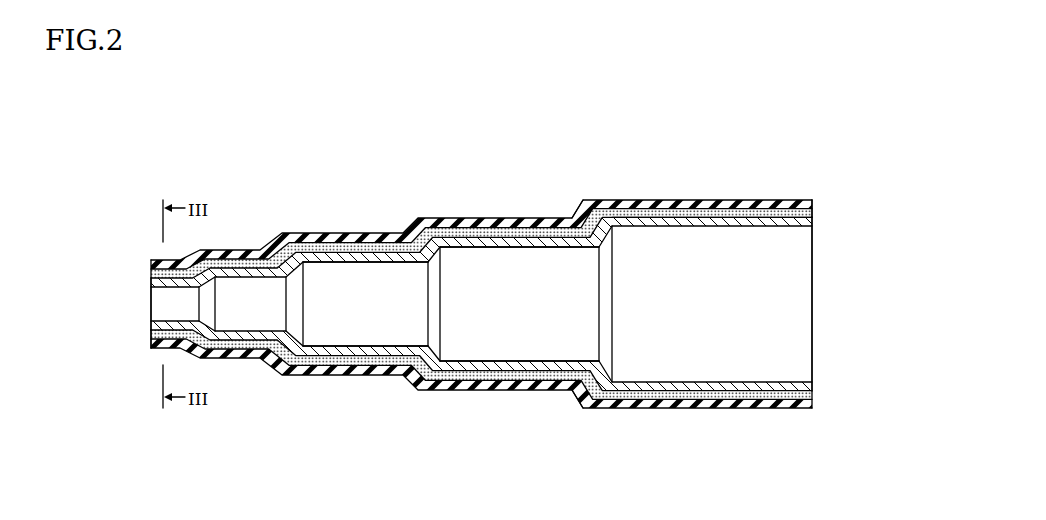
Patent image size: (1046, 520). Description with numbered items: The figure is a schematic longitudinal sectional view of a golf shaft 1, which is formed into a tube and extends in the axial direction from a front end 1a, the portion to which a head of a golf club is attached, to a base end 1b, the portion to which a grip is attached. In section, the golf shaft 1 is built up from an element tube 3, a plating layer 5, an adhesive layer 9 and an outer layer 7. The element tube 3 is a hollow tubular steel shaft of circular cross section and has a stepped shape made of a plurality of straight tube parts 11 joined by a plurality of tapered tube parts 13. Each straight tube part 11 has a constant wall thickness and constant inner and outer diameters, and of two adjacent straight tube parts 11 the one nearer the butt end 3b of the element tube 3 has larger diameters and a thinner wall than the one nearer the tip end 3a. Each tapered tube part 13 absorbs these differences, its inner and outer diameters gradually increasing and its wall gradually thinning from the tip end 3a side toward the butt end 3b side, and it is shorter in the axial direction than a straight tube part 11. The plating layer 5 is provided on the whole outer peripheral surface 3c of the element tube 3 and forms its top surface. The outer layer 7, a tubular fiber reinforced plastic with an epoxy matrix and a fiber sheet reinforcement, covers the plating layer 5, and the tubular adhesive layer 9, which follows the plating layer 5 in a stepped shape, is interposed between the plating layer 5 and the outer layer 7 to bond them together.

The golf shaft 1 is at (533, 201).
The front end 1a is at (147, 336).
The base end 1b is at (811, 199).
The element tube 3 is at (742, 215).
The tip end 3a is at (150, 309).
The butt end 3b is at (814, 246).
The outer peripheral surface 3c is at (662, 200).
The plating layer 5 is at (473, 218).
The outer layer 7 is at (697, 203).
The adhesive layer 9 is at (630, 200).
The straight tube part 11 is at (359, 318).
The tapered tube part 13 is at (437, 310).